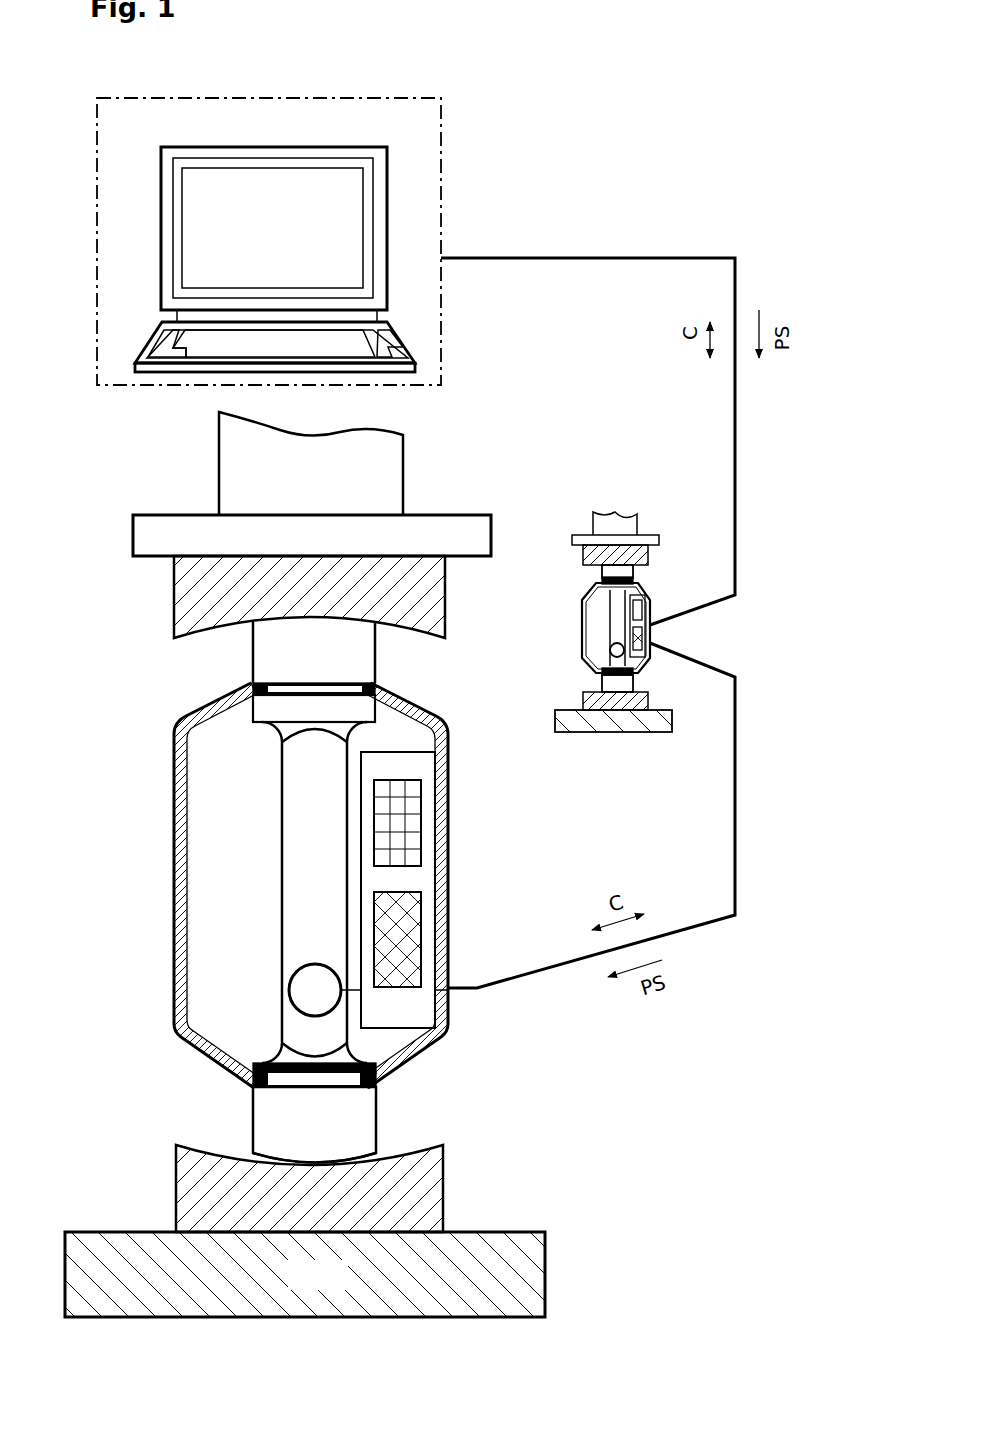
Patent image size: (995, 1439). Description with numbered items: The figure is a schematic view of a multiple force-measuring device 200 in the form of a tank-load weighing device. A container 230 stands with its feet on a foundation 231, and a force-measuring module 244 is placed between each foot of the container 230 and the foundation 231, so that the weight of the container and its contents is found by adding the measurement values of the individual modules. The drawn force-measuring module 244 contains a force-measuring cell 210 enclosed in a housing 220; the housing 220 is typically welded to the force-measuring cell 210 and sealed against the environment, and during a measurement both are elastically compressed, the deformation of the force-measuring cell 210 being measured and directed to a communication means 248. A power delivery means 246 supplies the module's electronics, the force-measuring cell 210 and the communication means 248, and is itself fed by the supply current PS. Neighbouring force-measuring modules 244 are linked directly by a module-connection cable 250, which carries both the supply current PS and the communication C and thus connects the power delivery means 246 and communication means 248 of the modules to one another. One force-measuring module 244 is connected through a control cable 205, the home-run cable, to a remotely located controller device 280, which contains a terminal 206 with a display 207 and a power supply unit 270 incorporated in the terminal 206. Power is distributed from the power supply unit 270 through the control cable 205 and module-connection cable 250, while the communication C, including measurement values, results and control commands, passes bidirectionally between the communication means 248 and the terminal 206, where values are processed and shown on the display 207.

The multiple force-measuring device 200 is at (786, 1117).
The control cable 205 is at (635, 258).
The terminal 206 is at (319, 206).
The display 207 is at (202, 213).
The force-measuring cell 210 is at (312, 992).
The housing 220 is at (177, 922).
The container 230 is at (311, 463).
The foundation 231 is at (305, 1274).
The force-measuring module 244 is at (558, 452).
The power delivery means 246 is at (395, 925).
The communication means 248 is at (405, 802).
The module-connection cable 250 is at (697, 928).
The power supply unit 270 is at (397, 333).
The controller device 280 is at (390, 97).